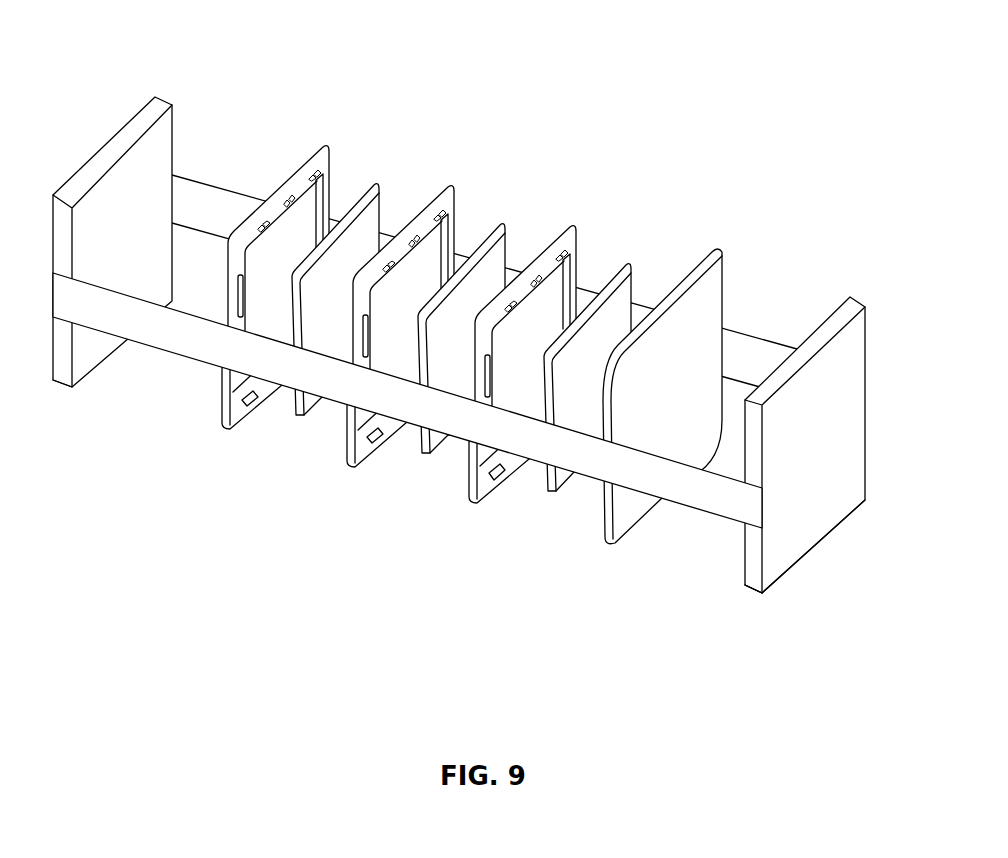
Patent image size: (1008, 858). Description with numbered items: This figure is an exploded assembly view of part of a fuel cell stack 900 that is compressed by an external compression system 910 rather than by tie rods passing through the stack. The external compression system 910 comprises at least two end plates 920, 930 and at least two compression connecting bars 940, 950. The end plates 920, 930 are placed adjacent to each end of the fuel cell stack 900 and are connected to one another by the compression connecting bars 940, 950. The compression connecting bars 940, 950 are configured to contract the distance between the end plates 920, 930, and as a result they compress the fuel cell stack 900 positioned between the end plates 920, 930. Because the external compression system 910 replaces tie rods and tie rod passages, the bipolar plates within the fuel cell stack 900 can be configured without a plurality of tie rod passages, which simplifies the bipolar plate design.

The fuel cell stack 900 is at (586, 106).
The external compression system 910 is at (788, 310).
The end plate 920 is at (788, 567).
The end plate 930 is at (62, 387).
The compression connecting bar 940 is at (710, 508).
The compression connecting bar 950 is at (200, 183).